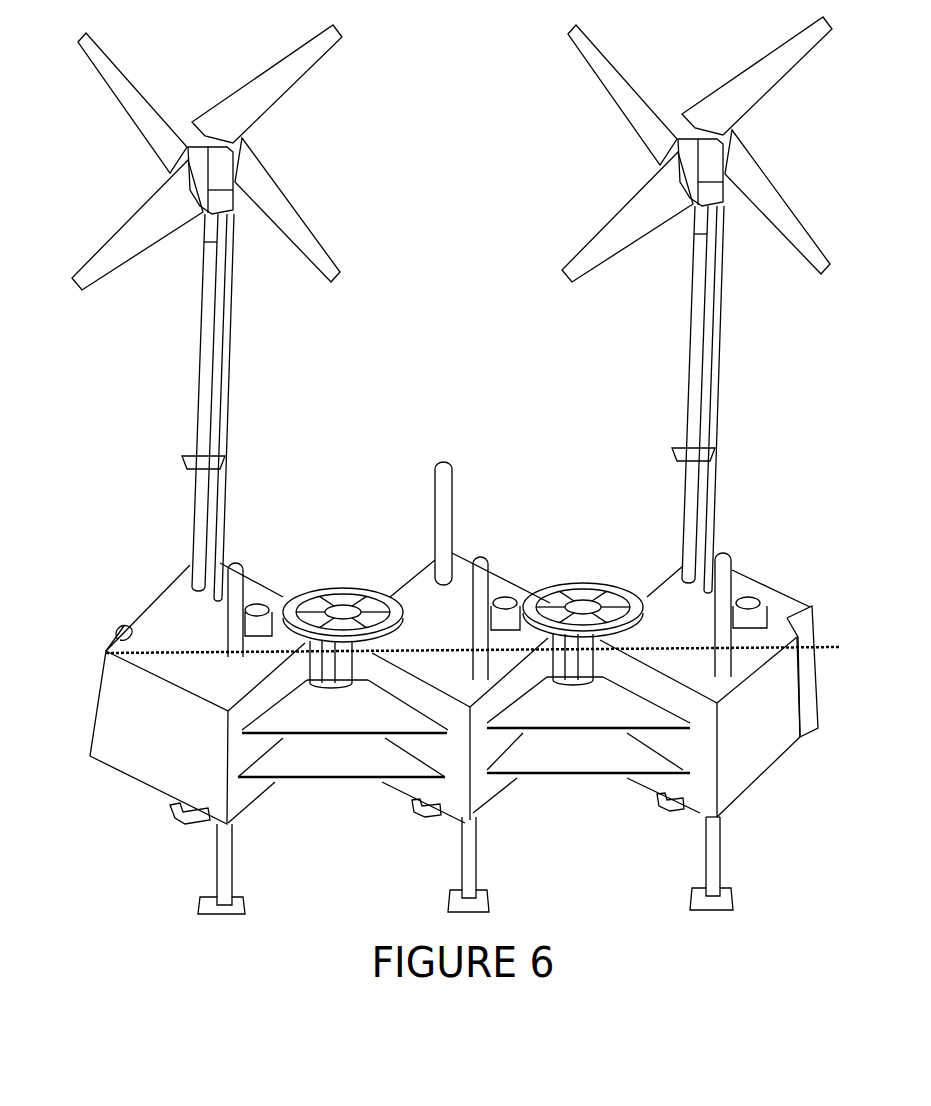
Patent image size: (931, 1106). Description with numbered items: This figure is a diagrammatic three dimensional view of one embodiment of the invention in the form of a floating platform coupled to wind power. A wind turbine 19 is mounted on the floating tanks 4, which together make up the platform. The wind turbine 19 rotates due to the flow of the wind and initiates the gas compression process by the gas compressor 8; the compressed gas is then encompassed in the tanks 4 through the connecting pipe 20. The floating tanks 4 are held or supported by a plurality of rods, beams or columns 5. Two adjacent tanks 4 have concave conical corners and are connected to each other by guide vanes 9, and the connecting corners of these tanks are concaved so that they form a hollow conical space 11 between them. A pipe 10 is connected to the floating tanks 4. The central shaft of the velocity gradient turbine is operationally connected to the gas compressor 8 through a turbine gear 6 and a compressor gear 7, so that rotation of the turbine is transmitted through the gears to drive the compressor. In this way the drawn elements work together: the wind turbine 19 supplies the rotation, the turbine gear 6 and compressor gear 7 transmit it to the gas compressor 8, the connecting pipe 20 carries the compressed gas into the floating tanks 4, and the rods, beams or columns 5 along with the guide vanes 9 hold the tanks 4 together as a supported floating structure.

The floating tanks 4 is at (157, 793).
The rods/beams/columns 5 is at (458, 465).
The turbine gear 6 is at (323, 587).
The compressor gear 7 is at (248, 603).
The gas compressor 8 is at (763, 620).
The guide vanes 9 is at (360, 737).
The pipe 10 is at (162, 655).
The hollow conical space 11 is at (807, 693).
The wind turbine 19 is at (142, 90).
The connecting pipe 20 is at (229, 366).